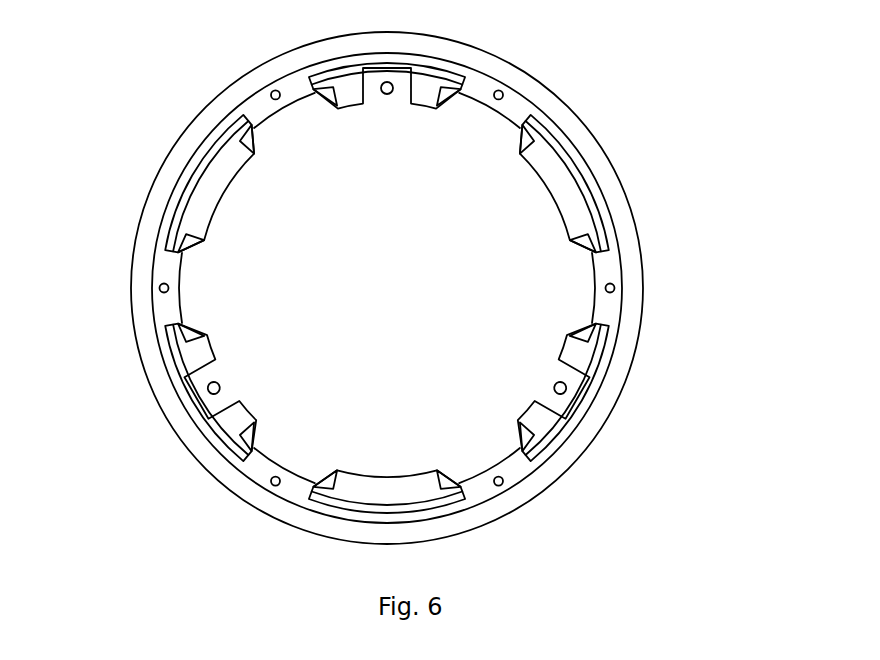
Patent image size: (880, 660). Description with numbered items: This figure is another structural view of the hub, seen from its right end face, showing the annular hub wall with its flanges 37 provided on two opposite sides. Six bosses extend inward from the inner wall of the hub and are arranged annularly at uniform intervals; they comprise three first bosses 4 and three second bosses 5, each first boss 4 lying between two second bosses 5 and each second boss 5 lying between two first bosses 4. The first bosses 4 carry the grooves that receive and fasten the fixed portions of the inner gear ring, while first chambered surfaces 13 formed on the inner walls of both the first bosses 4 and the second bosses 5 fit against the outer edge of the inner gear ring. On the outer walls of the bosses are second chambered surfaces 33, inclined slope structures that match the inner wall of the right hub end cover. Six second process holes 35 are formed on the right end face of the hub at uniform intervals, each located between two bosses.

The flange 37 is at (432, 42).
The second process hole 35 is at (270, 94).
The first chambered surface 13 is at (220, 202).
The second boss 5 is at (548, 173).
The first boss 4 is at (578, 355).
The second chambered surface 33 is at (385, 510).